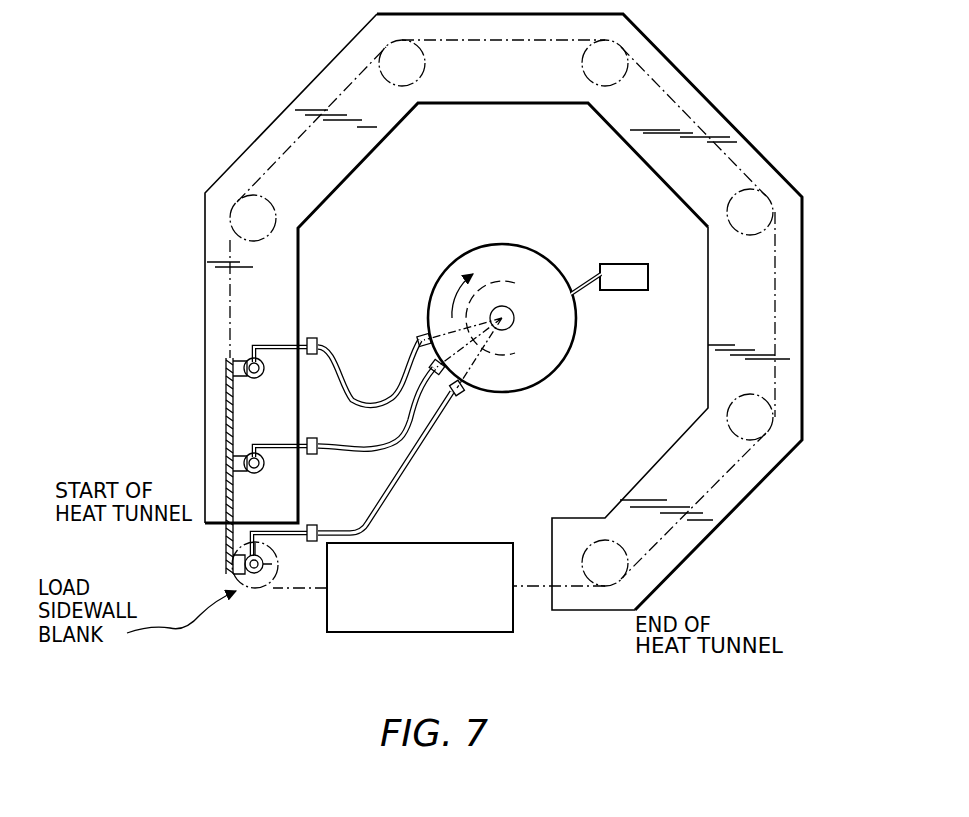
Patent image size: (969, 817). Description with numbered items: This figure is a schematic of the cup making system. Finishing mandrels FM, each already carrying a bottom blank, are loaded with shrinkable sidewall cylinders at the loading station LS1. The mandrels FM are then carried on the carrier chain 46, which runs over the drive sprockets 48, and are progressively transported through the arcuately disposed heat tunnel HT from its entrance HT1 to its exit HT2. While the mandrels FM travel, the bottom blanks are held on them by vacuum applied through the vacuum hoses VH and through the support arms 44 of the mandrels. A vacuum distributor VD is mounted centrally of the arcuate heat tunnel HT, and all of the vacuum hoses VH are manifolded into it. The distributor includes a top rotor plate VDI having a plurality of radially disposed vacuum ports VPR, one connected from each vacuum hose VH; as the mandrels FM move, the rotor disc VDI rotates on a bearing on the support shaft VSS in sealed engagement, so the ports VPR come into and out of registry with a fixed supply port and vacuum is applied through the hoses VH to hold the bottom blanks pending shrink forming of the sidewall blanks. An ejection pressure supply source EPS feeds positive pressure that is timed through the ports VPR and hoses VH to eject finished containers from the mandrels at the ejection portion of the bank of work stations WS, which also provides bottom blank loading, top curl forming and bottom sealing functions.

The support arms 44 is at (252, 347).
The carrier chain 46 is at (227, 405).
The drive sprockets 48 is at (425, 55).
The heat tunnel HT is at (269, 119).
The entrance of heat tunnel HT1 is at (206, 533).
The exit of heat tunnel HT2 is at (545, 615).
The loading station LS1 is at (213, 591).
The work stations WS is at (430, 640).
The vacuum distributor VD is at (624, 366).
The top rotor plate VDI is at (555, 304).
The support shaft VSS is at (550, 335).
The vacuum ports VPR is at (518, 377).
The vacuum hoses VH is at (350, 381).
The finishing mandrels FM is at (260, 376).
The ejection pressure supply source EPS is at (609, 279).